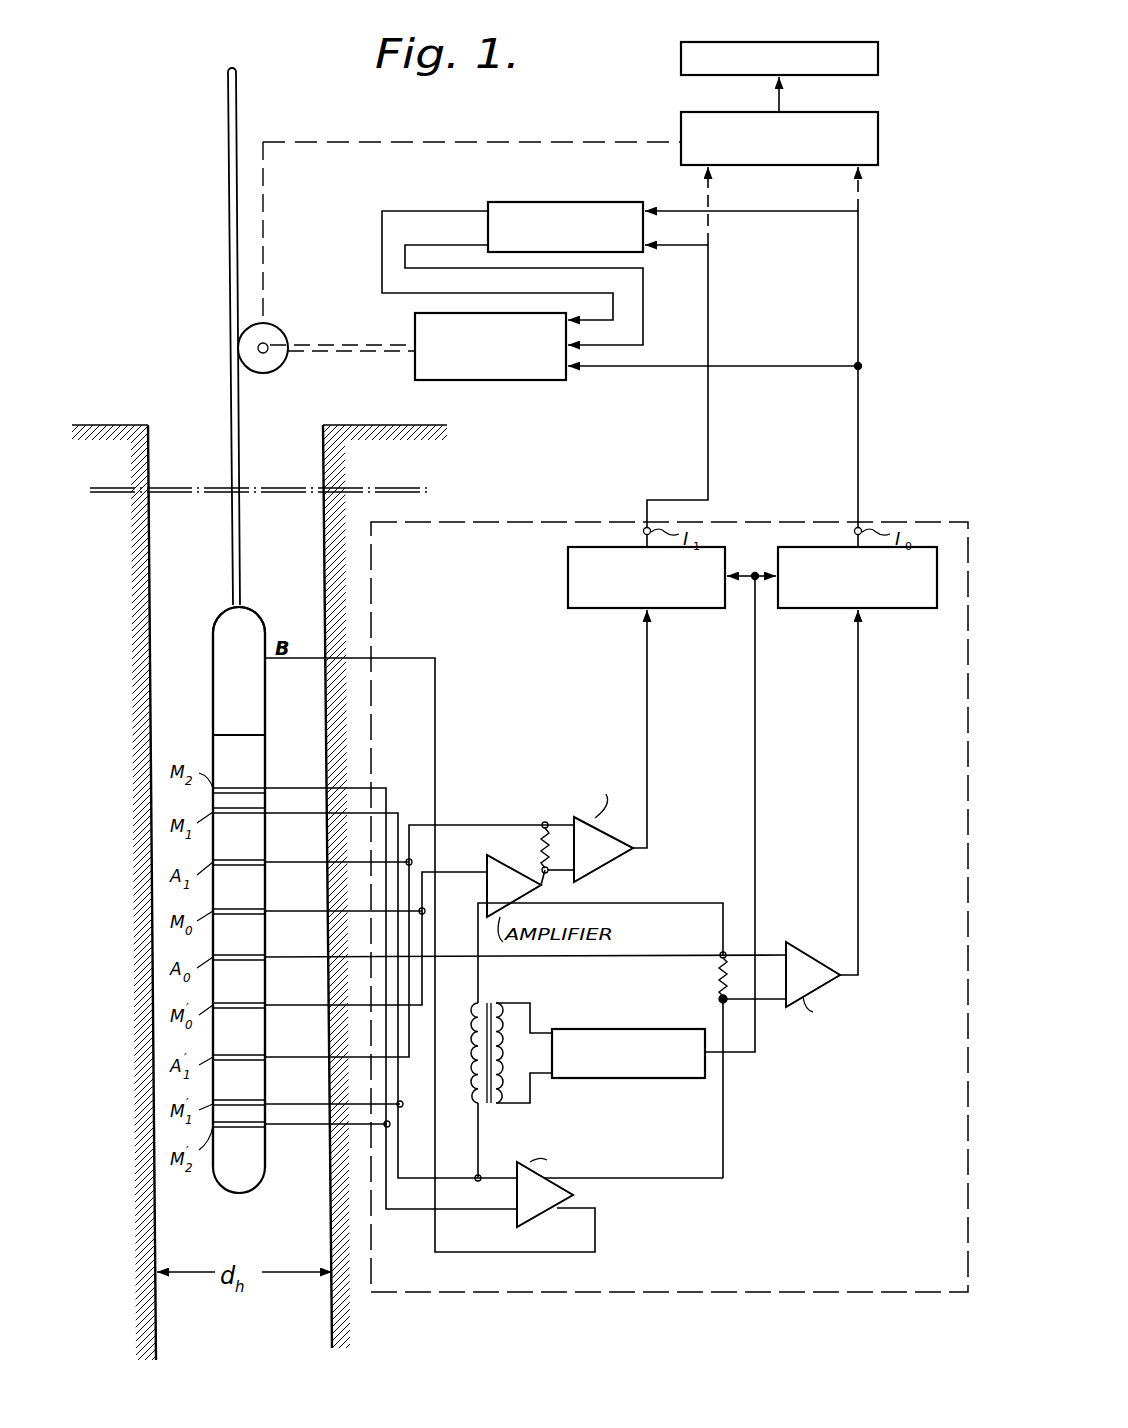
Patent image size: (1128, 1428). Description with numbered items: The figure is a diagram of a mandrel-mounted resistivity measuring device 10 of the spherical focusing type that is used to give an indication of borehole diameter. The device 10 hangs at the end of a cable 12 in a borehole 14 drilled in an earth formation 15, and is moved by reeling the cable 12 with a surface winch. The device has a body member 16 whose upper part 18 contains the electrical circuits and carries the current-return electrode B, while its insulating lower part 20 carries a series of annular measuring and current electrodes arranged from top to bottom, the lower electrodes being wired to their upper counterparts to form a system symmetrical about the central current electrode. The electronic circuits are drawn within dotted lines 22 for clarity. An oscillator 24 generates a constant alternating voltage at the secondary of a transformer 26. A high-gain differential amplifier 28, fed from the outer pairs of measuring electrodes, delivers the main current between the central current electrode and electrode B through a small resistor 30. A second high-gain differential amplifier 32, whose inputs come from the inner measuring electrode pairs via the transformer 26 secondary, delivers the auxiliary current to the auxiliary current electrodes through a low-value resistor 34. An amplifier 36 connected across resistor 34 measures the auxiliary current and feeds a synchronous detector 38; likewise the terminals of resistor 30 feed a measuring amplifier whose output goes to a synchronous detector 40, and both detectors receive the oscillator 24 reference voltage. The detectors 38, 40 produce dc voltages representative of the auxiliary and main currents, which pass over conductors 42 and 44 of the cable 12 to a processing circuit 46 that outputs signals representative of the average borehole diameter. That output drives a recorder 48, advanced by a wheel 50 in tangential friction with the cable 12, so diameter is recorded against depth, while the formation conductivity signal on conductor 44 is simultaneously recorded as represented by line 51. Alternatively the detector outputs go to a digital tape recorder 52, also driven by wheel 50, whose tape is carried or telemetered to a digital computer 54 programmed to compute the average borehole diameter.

The device 10 is at (206, 692).
The cable 12 is at (228, 232).
The borehole 14 is at (152, 568).
The earth formation 15 is at (335, 545).
The body member 16 is at (258, 762).
The upper part 18 is at (212, 657).
The lower part 20 is at (262, 976).
The dotted lines 22 is at (493, 522).
The oscillator 24 is at (640, 1080).
The transformer 26 is at (508, 1003).
The high-gain differential amplifier 28 is at (542, 1220).
The resistor 30 is at (718, 968).
The high-gain differential amplifier 32 is at (498, 853).
The resistor 34 is at (562, 852).
The amplifier 36 is at (640, 860).
The synchronous detector 38 is at (805, 945).
The synchronous detector 40 is at (915, 610).
The conductor 42 is at (712, 462).
The conductor 44 is at (870, 462).
The processing circuit 46 is at (583, 201).
The recorder 48 is at (483, 381).
The wheel 50 is at (275, 371).
The line 51 is at (775, 366).
The digital tape recorder 52 is at (881, 125).
The digital computer 54 is at (866, 38).